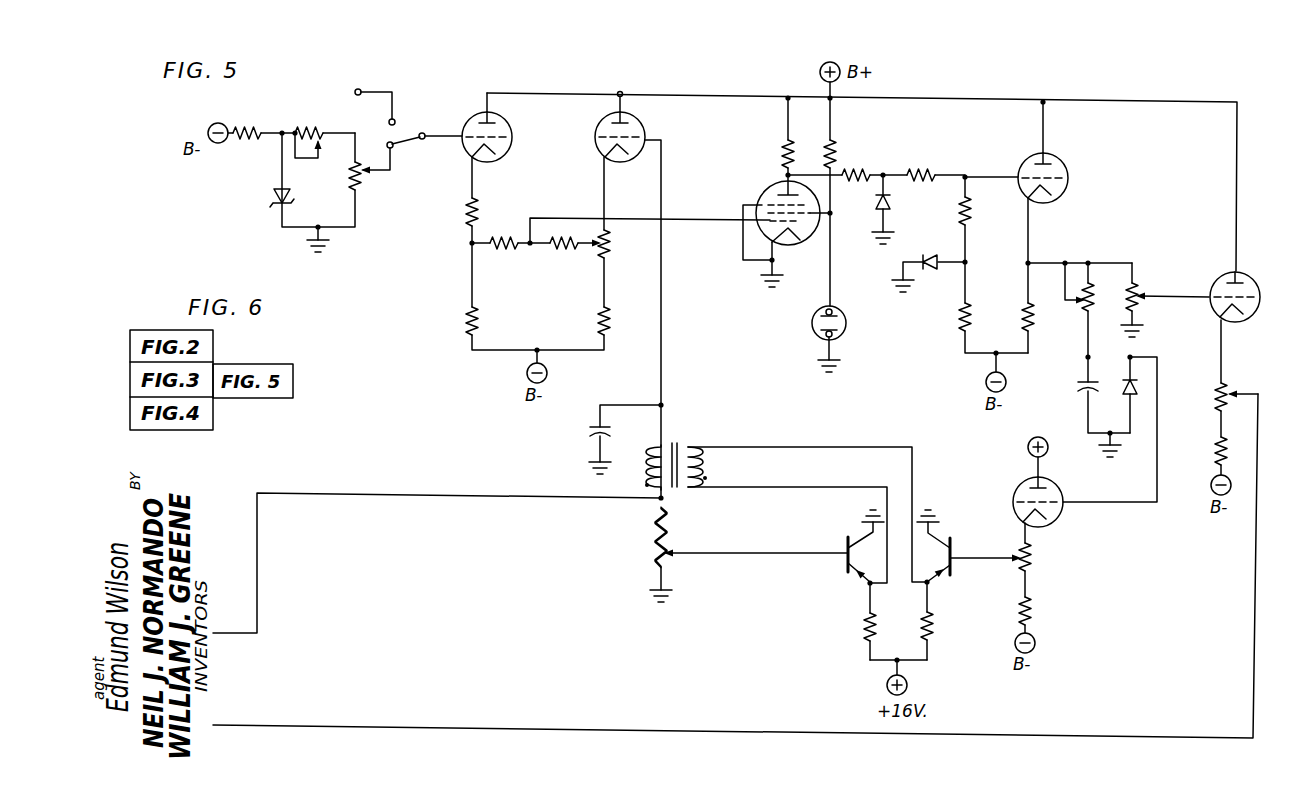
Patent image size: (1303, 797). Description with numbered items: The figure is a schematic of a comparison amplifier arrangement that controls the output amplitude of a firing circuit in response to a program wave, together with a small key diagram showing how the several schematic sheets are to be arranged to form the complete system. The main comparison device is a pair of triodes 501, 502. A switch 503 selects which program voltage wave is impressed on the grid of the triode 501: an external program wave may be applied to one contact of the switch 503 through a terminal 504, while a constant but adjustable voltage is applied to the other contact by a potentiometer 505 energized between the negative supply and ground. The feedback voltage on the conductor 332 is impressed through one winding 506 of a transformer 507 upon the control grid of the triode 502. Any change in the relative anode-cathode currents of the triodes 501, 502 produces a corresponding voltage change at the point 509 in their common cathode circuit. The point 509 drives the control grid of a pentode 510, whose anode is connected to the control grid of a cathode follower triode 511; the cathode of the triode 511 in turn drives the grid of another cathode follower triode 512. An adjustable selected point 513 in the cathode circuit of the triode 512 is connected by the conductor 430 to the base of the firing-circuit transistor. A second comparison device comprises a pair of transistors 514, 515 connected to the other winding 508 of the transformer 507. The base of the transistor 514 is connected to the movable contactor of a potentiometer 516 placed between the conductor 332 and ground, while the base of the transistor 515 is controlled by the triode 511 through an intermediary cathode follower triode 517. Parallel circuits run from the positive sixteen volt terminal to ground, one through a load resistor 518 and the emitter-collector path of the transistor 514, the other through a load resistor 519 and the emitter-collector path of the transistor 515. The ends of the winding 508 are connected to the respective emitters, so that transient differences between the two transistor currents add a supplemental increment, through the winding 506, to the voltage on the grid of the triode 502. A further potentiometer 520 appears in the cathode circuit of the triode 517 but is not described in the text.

The triode 501 is at (502, 123).
The triode 502 is at (637, 123).
The switch 503 is at (410, 137).
The terminal 504 is at (359, 89).
The potentiometer 505 is at (366, 172).
The transformer winding 506 is at (650, 467).
The transformer 507 is at (756, 489).
The transformer winding 508 is at (706, 470).
The point 509 is at (530, 246).
The pentode 510 is at (766, 192).
The cathode follower triode 511 is at (1063, 166).
The cathode follower triode 512 is at (1252, 283).
The adjustable selected point 513 is at (1232, 385).
The transistor 514 is at (843, 568).
The transistor 515 is at (950, 540).
The potentiometer 516 is at (650, 551).
The cathode follower triode 517 is at (1063, 513).
The load resistor 518 is at (860, 618).
The load resistor 519 is at (935, 624).
The potentiometer 520 is at (1032, 566).
The conductor 332 is at (243, 633).
The conductor 430 is at (244, 725).